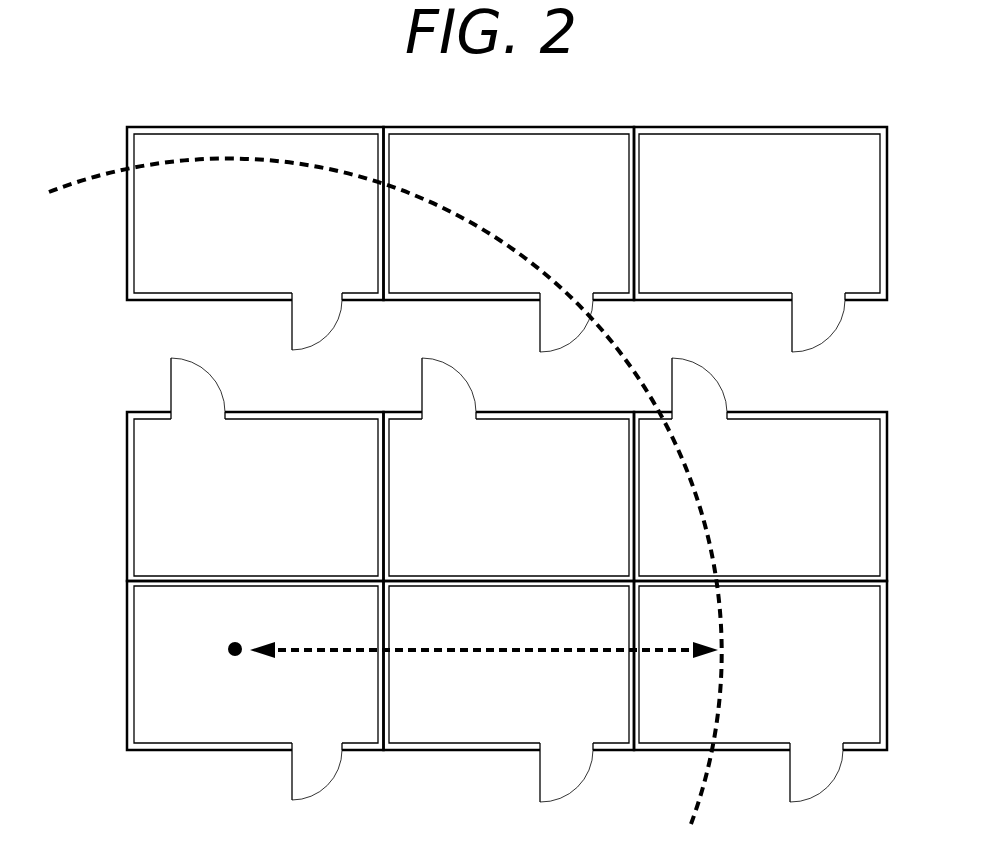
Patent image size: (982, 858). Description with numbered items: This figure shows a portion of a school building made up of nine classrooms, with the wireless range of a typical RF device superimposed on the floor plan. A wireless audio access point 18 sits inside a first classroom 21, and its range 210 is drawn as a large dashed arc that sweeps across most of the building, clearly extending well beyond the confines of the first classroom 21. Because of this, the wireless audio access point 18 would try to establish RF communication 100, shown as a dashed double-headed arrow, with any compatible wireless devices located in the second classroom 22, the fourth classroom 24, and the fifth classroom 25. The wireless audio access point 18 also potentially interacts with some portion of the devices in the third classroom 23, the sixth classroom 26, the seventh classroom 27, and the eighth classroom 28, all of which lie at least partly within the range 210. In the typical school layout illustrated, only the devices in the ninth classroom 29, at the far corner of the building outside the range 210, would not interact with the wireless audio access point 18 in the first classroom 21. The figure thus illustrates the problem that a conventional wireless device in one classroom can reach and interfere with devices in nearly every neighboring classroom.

The wireless audio access point 18 is at (234, 648).
The first classroom 21 is at (190, 728).
The second classroom 22 is at (440, 728).
The third classroom 23 is at (867, 728).
The fourth classroom 24 is at (190, 564).
The fifth classroom 25 is at (440, 564).
The sixth classroom 26 is at (867, 564).
The seventh classroom 27 is at (190, 281).
The eighth classroom 28 is at (440, 281).
The ninth classroom 29 is at (867, 283).
The RF communication 100 is at (618, 652).
The range 210 is at (703, 790).